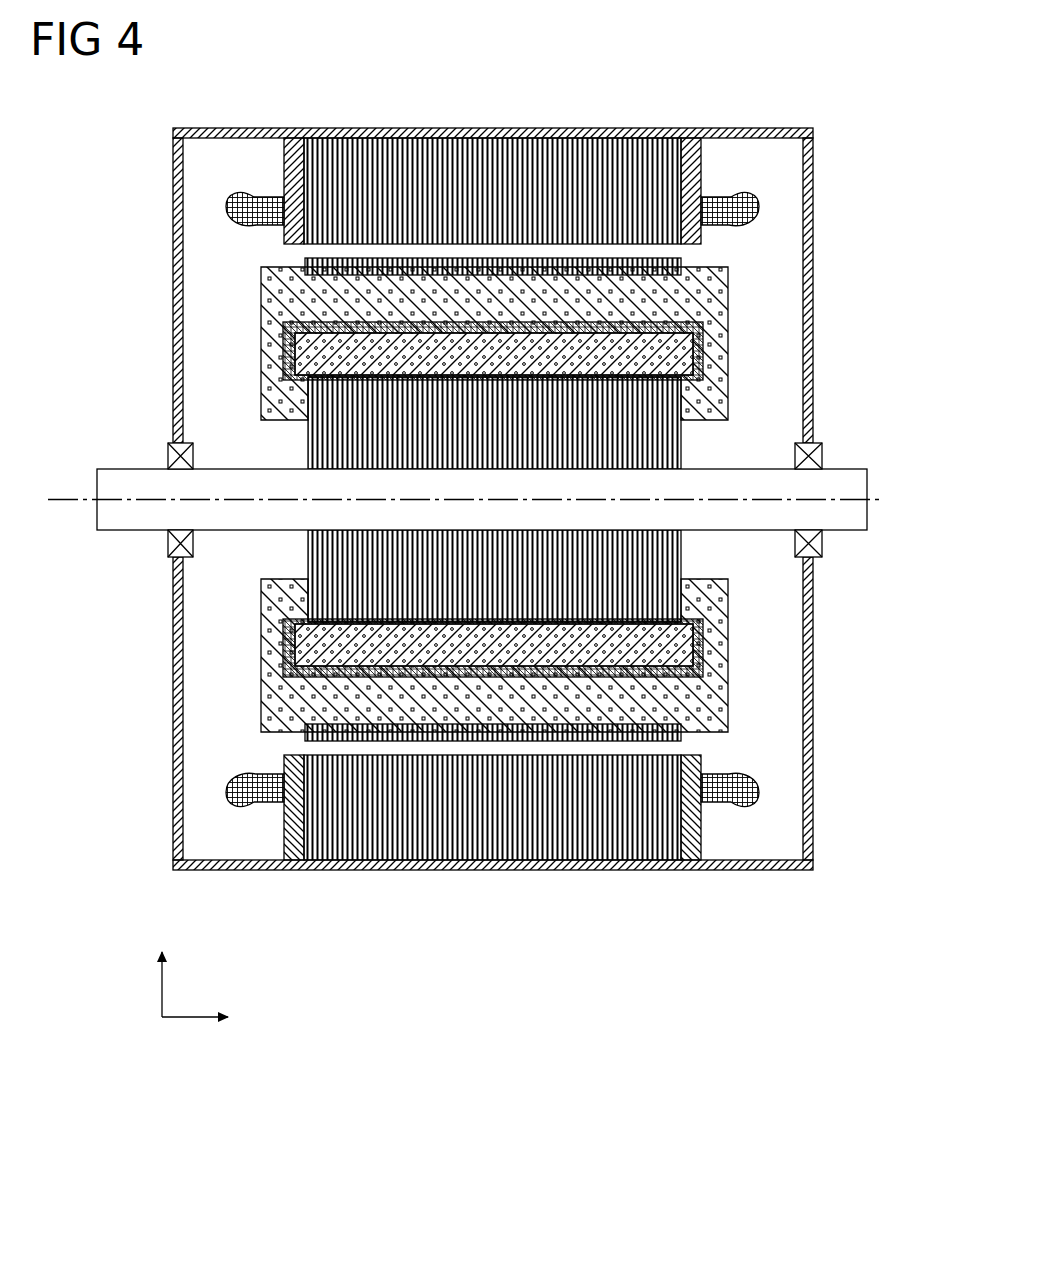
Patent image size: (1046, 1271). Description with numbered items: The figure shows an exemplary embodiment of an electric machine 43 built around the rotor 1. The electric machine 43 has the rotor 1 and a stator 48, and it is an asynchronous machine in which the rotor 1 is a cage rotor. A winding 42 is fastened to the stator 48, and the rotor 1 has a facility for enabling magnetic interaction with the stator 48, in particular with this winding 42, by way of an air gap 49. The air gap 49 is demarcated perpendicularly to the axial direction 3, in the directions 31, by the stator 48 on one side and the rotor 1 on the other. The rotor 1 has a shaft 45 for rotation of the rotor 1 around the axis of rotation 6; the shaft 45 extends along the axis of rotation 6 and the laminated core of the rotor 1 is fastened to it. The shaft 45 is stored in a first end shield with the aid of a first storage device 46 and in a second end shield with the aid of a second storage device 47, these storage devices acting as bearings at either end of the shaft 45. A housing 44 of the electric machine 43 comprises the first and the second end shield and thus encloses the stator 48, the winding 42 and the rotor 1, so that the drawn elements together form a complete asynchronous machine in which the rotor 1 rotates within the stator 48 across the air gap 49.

The rotor 1 is at (248, 268).
The axial direction 3 is at (190, 1018).
The axis of rotation 6 is at (60, 498).
The directions 31 is at (160, 991).
The winding 42 is at (742, 195).
The electric machine 43 is at (604, 96).
The housing 44 is at (232, 130).
The shaft 45 is at (120, 535).
The first storage device 46 is at (170, 457).
The second storage device 47 is at (822, 455).
The stator 48 is at (442, 165).
The air gap 49 is at (665, 251).